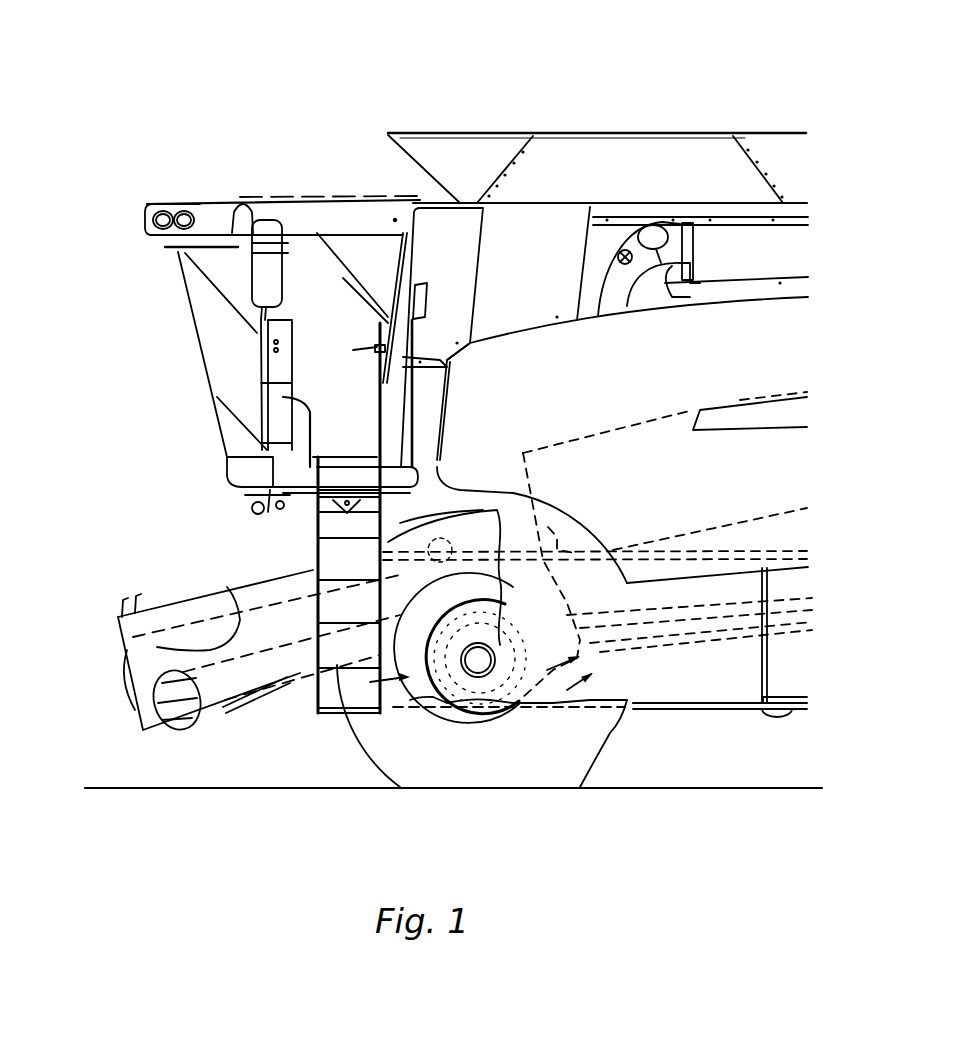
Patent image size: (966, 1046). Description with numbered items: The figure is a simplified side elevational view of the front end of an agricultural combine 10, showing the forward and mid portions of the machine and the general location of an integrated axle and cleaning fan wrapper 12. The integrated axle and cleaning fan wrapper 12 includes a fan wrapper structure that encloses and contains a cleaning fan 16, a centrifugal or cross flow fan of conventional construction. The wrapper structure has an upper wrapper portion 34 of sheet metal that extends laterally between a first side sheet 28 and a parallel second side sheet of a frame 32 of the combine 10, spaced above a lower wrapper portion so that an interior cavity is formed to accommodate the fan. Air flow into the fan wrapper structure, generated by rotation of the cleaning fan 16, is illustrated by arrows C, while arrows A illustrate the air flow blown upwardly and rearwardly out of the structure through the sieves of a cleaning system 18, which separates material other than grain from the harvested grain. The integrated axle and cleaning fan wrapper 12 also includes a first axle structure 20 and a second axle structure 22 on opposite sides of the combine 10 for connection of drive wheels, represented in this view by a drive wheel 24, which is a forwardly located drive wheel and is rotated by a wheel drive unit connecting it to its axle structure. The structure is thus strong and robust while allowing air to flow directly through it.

The combine 10 is at (832, 118).
The integrated axle and cleaning fan wrapper 12 is at (522, 735).
The cleaning fan 16 is at (528, 645).
The cleaning system 18 is at (800, 593).
The first axle structure 20 is at (427, 706).
The second axle structure 22 is at (427, 706).
The drive wheel 24 is at (607, 753).
The first side sheet 28 is at (657, 710).
The frame 32 is at (733, 710).
The upper wrapper portion 34 is at (565, 598).
The arrows A is at (592, 662).
The arrows C is at (378, 680).